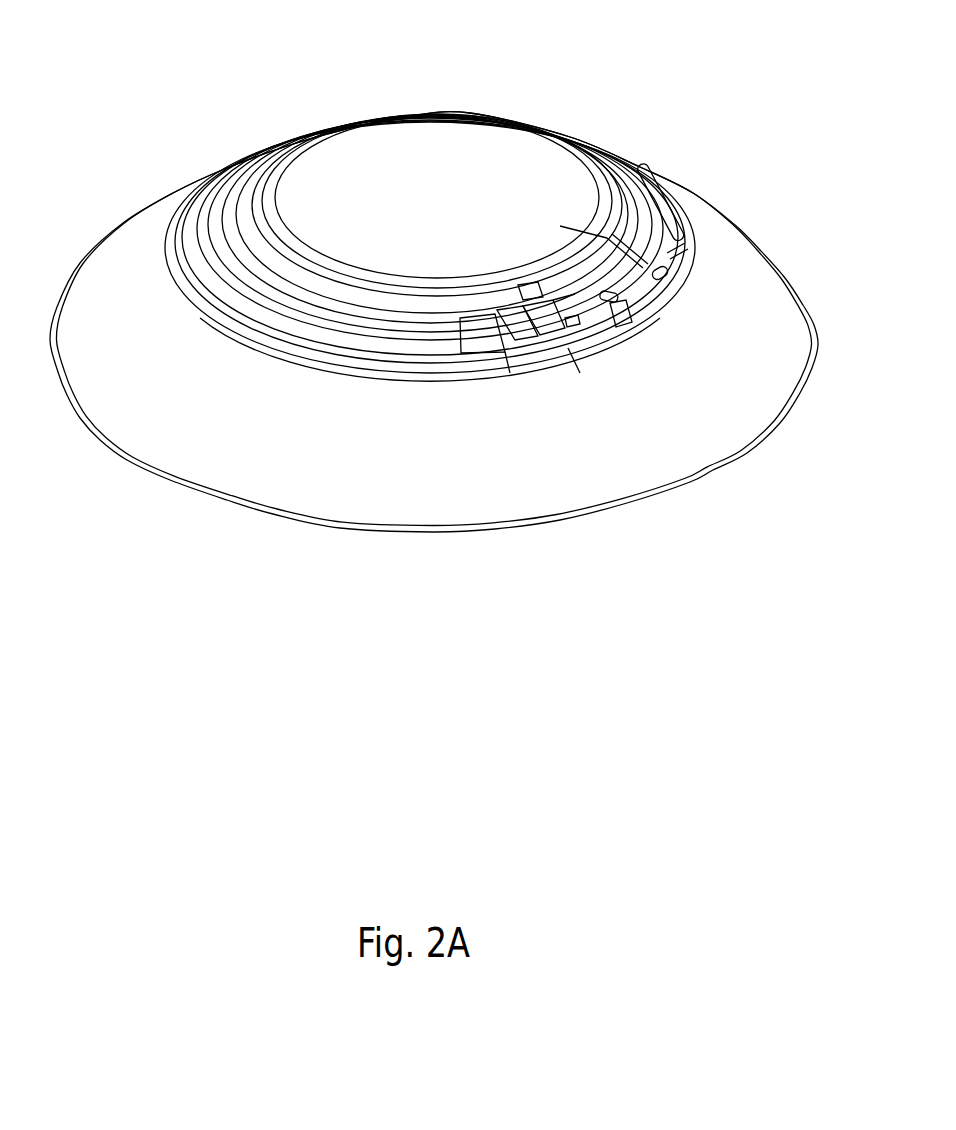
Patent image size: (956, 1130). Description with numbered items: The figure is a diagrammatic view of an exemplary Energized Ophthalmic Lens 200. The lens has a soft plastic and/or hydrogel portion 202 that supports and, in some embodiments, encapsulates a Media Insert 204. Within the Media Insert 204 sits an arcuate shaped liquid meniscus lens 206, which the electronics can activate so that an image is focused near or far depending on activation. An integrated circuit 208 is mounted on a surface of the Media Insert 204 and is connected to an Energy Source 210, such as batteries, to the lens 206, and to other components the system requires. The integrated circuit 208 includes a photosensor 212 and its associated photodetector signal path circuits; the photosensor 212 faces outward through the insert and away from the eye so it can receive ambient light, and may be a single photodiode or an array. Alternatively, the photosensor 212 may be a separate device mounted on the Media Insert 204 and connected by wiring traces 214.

The Energized Ophthalmic Lens 200 is at (434, 337).
The soft plastic and/or hydrogel portion 202 is at (225, 410).
The Media Insert 204 is at (630, 340).
The arcuate shaped liquid meniscus lens 206 is at (413, 182).
The integrated circuit 208 is at (653, 290).
The Energy Source 210 is at (257, 319).
The photosensor 212 is at (644, 192).
The wiring traces 214 is at (565, 345).